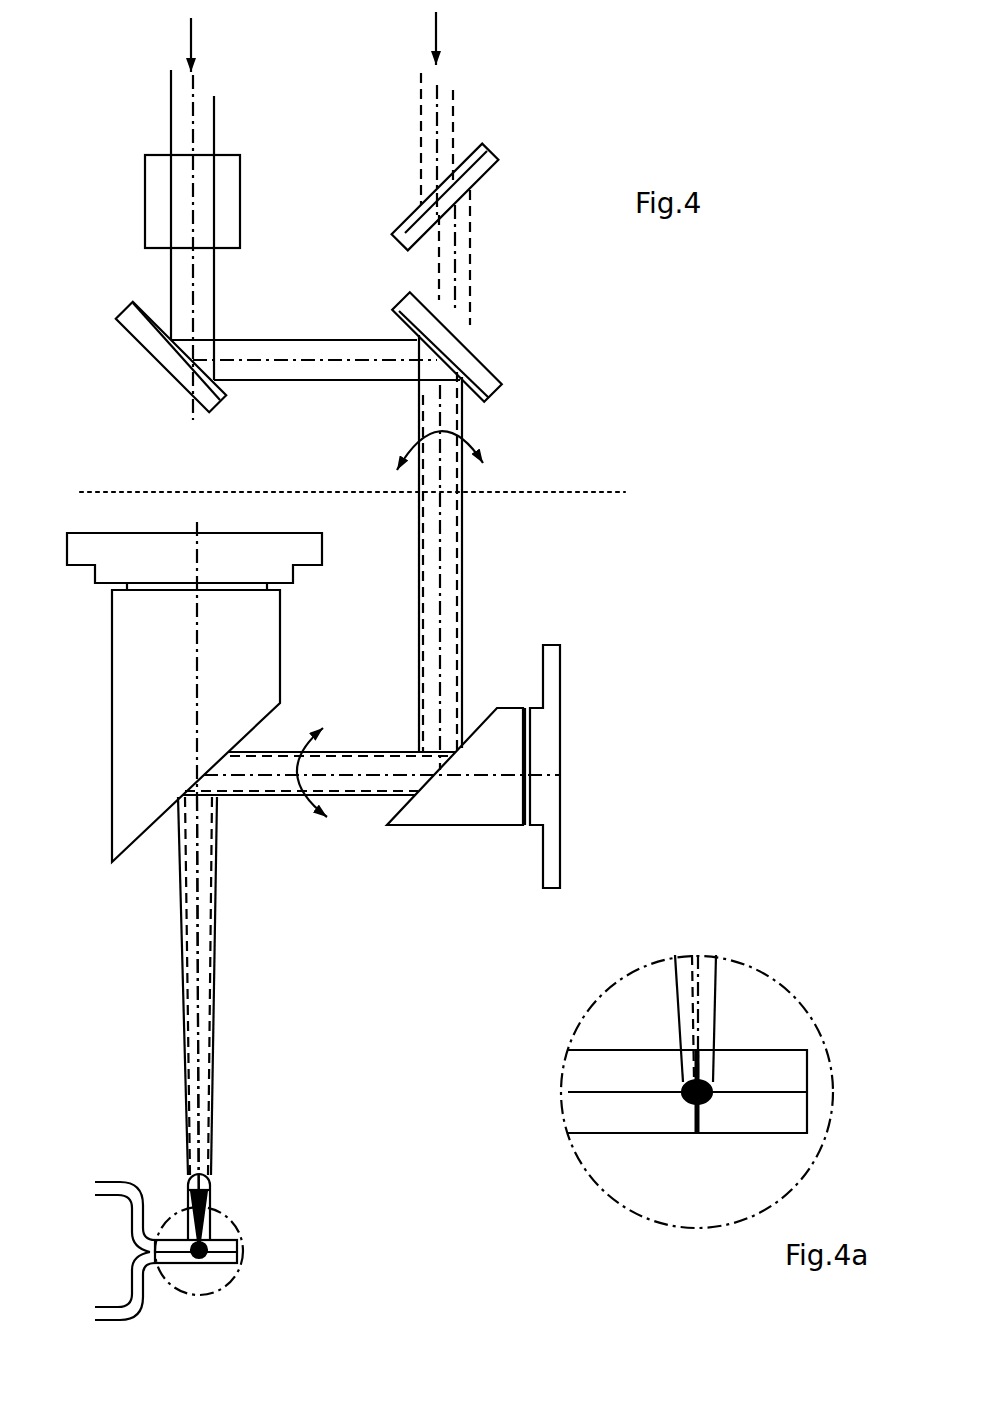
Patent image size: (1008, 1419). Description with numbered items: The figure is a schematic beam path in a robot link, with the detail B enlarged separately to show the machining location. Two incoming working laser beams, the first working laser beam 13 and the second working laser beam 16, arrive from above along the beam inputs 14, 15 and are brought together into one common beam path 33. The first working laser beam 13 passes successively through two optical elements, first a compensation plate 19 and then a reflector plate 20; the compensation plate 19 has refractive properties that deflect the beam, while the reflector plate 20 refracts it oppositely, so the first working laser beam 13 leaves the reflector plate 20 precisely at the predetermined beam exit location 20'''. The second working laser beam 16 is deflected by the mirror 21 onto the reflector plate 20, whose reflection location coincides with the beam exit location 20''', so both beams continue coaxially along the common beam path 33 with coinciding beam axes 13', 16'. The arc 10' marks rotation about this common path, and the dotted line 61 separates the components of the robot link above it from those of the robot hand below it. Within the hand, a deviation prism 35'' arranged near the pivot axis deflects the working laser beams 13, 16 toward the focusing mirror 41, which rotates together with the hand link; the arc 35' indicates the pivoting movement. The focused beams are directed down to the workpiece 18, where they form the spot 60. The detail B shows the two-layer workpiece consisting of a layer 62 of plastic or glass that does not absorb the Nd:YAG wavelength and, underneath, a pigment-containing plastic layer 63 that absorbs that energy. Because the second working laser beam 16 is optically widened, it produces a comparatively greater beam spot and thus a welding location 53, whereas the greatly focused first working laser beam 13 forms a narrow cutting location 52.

In FIG. 4, the laser beam 14 is at (455, 100).
In FIG. 4, the laser beam 15 is at (220, 105).
In FIG. 4, the compensation plate 19 is at (500, 157).
In FIG. 4, the reflector plate 20 is at (489, 347).
In FIG. 4, the beam exit location 20''' is at (492, 346).
In FIG. 4, the deflecting mirror 21 is at (142, 332).
In FIG. 4, the common beam path 33 is at (410, 412).
In FIG. 4, the rotation about beam axis 10' is at (465, 544).
In FIG. 4, the dotted line 61 is at (600, 487).
In FIG. 4, the focusing mirror 41 is at (168, 704).
In FIG. 4, the pivoting movement 35' is at (371, 787).
In FIG. 4, the deviation prism 35'' is at (473, 766).
In FIG. 4, the first working laser beam 13 is at (138, 986).
In FIG. 4, the second working laser beam 16 is at (264, 986).
In FIG. 4, the beam axis 13' is at (276, 1021).
In FIG. 4, the beam axis 16' is at (276, 1021).
In FIG. 4, the workpiece 18 is at (248, 1247).
In FIG. 4A, the workpiece 18 is at (698, 1101).
In FIG. 4, the focal spot 60 is at (203, 1268).
In FIG. 4A, the focal spot 60 is at (718, 1073).
In FIG. 4, the detail B is at (238, 1272).
In FIG. 4A, the layer 62 is at (583, 1077).
In FIG. 4A, the layer 63 is at (590, 1113).
In FIG. 4A, the cutting location 52 is at (697, 1127).
In FIG. 4A, the welding location 53 is at (690, 1100).